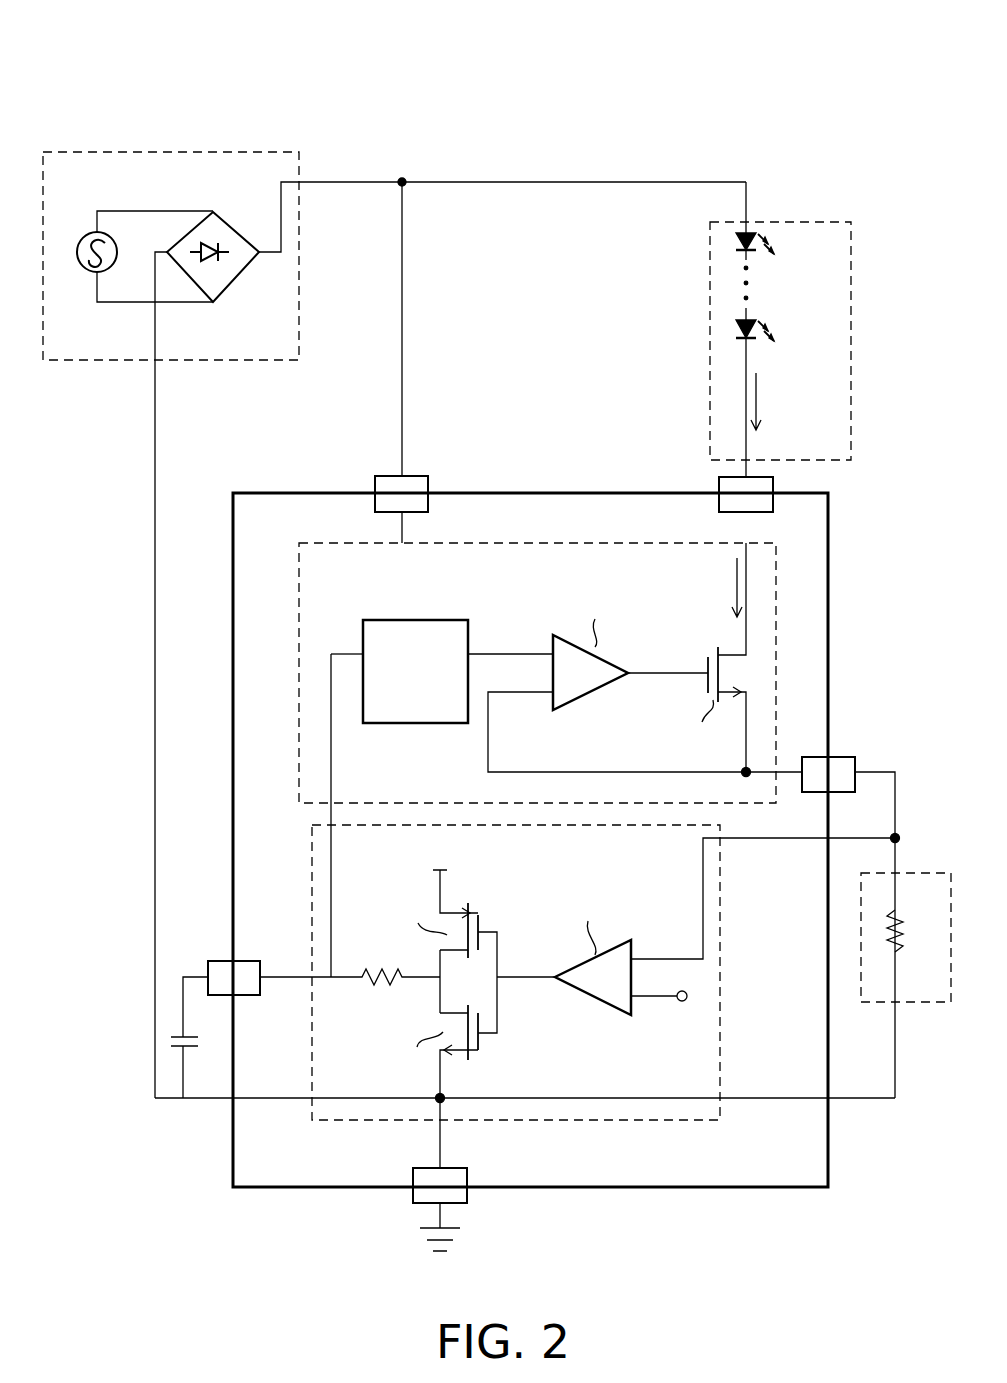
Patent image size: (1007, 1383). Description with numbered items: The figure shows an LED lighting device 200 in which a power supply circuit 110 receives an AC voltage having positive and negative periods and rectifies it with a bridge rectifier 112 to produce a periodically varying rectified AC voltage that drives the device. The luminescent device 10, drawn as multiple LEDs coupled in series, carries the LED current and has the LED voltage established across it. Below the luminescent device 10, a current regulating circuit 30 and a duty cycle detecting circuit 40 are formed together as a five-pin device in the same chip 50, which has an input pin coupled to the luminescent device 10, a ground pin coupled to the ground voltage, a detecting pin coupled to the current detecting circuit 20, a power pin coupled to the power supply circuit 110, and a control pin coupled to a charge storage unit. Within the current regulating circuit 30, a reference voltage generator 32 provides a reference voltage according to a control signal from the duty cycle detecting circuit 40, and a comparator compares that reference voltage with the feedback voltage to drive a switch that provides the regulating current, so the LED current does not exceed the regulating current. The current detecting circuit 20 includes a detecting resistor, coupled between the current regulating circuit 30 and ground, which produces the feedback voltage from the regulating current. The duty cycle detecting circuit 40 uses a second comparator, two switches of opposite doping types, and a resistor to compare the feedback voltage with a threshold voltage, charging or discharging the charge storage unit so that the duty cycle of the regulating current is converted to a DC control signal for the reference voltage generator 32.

The LED lighting device 200 is at (784, 80).
The power supply circuit 110 is at (155, 152).
The bridge rectifier 112 is at (233, 230).
The luminescent device 10 is at (710, 332).
The current detecting circuit 20 is at (932, 873).
The current regulating circuit 30 is at (299, 690).
The reference voltage generator 32 is at (427, 691).
The duty cycle detecting circuit 40 is at (312, 935).
The chip 50 is at (556, 493).